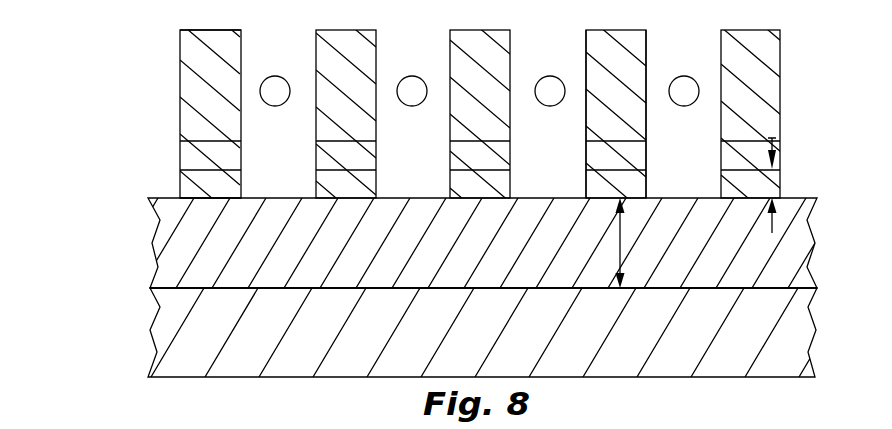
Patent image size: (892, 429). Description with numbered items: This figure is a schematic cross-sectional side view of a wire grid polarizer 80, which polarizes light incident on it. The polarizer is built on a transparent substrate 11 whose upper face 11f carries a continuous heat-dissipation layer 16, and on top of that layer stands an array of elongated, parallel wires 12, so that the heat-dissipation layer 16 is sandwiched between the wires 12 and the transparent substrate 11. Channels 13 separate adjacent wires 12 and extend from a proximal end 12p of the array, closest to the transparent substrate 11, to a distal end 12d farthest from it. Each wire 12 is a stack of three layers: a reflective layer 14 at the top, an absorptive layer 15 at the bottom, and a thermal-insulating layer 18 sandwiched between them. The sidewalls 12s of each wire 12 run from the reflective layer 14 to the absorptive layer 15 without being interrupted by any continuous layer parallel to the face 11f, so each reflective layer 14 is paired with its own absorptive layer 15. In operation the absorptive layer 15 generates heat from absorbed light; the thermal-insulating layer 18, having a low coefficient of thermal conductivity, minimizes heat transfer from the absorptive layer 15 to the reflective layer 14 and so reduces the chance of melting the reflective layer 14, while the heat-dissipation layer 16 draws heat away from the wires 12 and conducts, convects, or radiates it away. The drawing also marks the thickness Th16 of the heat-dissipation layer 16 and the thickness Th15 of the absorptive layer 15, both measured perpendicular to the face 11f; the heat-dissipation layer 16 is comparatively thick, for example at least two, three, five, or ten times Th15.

The wire grid polarizer 80 is at (100, 309).
The transparent substrate 11 is at (465, 345).
The face of the transparent substrate 11f is at (168, 287).
The heat-dissipation layer 16 is at (472, 253).
The wires 12 is at (124, 128).
The distal end of the array of wires 12d is at (225, 32).
The sidewalls of the wires 12s is at (586, 115).
The proximal end of the array of wires 12p is at (226, 203).
The channels 13 is at (479, 91).
The reflective layer 14 is at (763, 103).
The thermal-insulating layer 18 is at (763, 168).
The absorptive layer 15 is at (763, 196).
The thickness of the heat-dissipation layer Th16 is at (625, 243).
The thickness of the absorptive layer Th15 is at (779, 229).